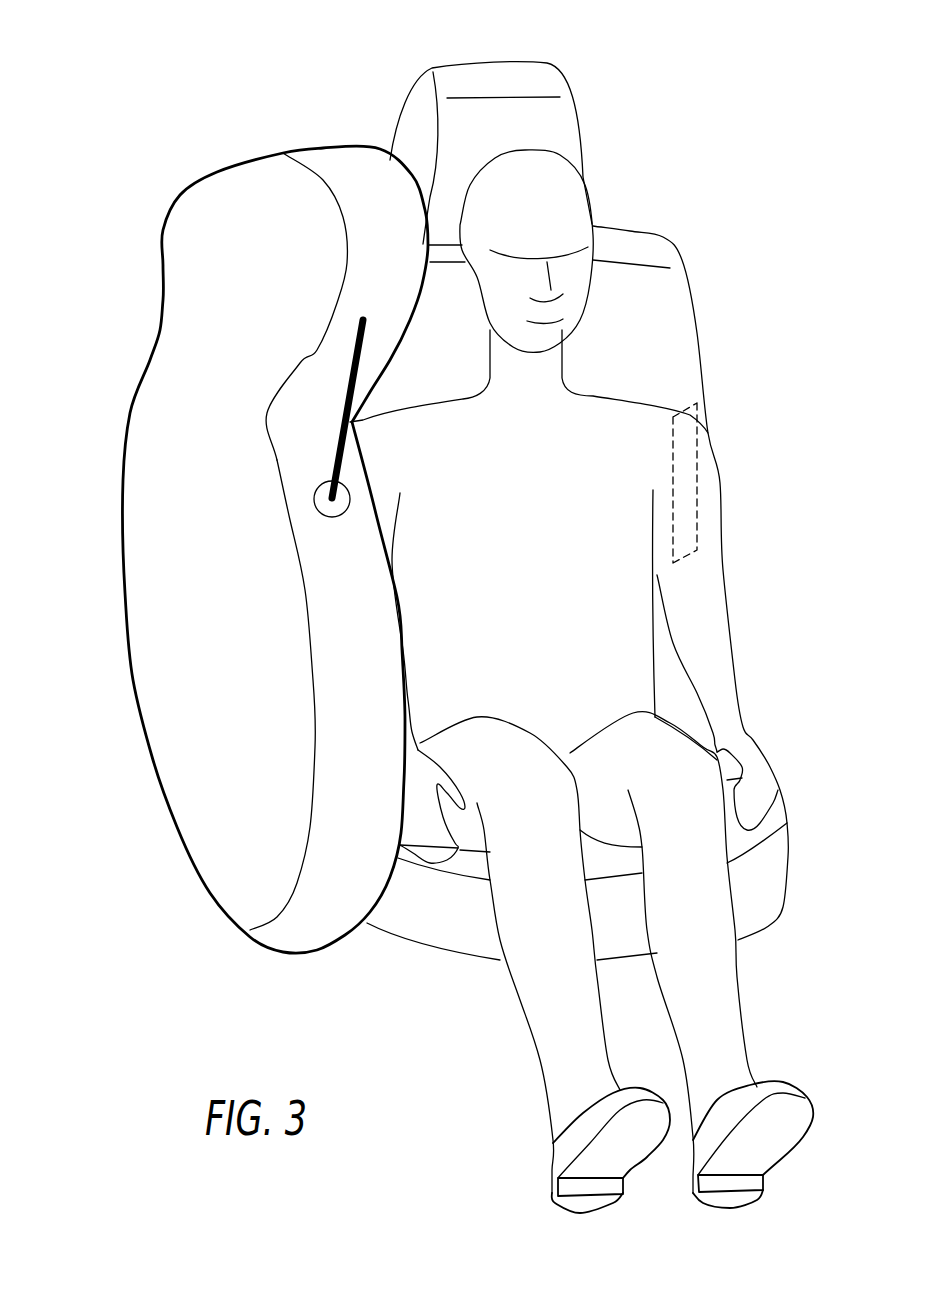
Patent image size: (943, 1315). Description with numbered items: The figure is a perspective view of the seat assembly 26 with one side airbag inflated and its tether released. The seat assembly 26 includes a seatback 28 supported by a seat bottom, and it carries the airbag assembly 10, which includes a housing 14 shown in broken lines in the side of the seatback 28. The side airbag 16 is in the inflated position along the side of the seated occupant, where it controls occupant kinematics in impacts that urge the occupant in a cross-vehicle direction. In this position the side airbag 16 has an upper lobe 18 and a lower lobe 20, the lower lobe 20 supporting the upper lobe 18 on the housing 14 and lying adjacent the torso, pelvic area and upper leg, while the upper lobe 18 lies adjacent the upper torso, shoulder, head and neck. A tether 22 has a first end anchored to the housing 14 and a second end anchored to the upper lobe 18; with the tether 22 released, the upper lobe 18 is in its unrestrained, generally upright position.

The airbag assembly 10 is at (427, 500).
The housing 14 is at (698, 503).
The side airbag 16 is at (146, 769).
The upper lobe 18 is at (178, 202).
The lower lobe 20 is at (128, 642).
The tether 22 is at (353, 370).
The seat assembly 26 is at (578, 62).
The seatback 28 is at (688, 224).